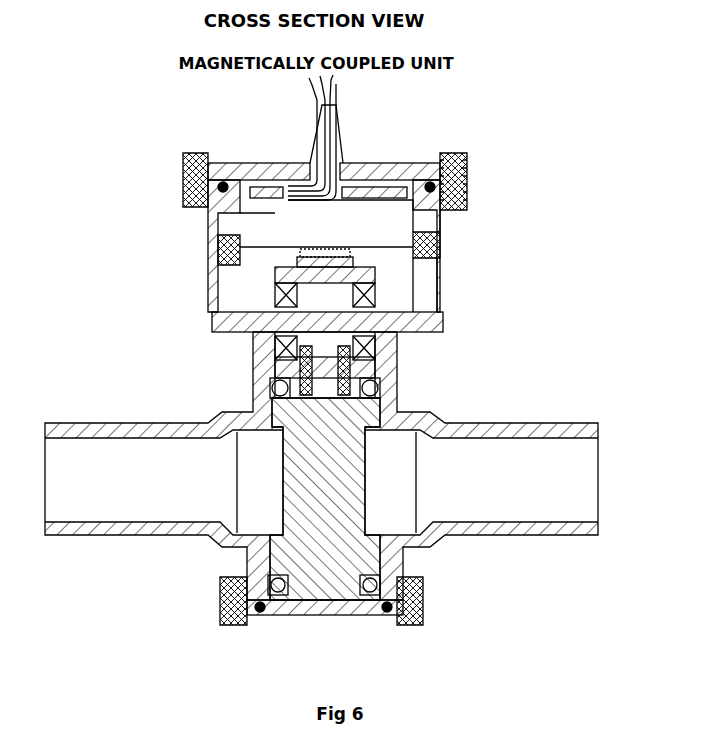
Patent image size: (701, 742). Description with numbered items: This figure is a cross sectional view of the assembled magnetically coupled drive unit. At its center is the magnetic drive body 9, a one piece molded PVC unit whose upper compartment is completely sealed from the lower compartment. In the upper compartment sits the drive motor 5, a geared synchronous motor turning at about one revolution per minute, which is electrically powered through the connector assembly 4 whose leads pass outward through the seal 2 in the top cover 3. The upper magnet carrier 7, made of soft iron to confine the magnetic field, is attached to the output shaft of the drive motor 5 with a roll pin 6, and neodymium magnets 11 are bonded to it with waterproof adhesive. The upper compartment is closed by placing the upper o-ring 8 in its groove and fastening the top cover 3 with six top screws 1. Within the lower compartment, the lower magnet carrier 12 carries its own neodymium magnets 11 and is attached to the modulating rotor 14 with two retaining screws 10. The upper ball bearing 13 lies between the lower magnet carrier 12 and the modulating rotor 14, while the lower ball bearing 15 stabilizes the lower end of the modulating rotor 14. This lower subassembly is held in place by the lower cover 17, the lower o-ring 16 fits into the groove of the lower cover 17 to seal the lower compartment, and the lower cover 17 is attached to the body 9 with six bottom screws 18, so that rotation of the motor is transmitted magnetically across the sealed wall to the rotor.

The top screws 1 is at (468, 153).
The seal 2 is at (340, 150).
The top cover 3 is at (270, 162).
The connector assembly 4 is at (229, 197).
The drive motor 5 is at (408, 227).
The roll pin 6 is at (358, 253).
The upper magnet carrier 7 is at (275, 283).
The upper o-ring 8 is at (222, 189).
The magnetic drive body 9 is at (446, 319).
The retaining screws 10 is at (362, 355).
The neodymium magnets 11 is at (275, 303).
The lower magnet carrier 12 is at (380, 366).
The upper ball bearing 13 is at (270, 385).
The modulating rotor 14 is at (365, 482).
The lower ball bearing 15 is at (268, 588).
The lower o-ring 16 is at (386, 608).
The lower cover 17 is at (315, 608).
The bottom screws 18 is at (420, 623).